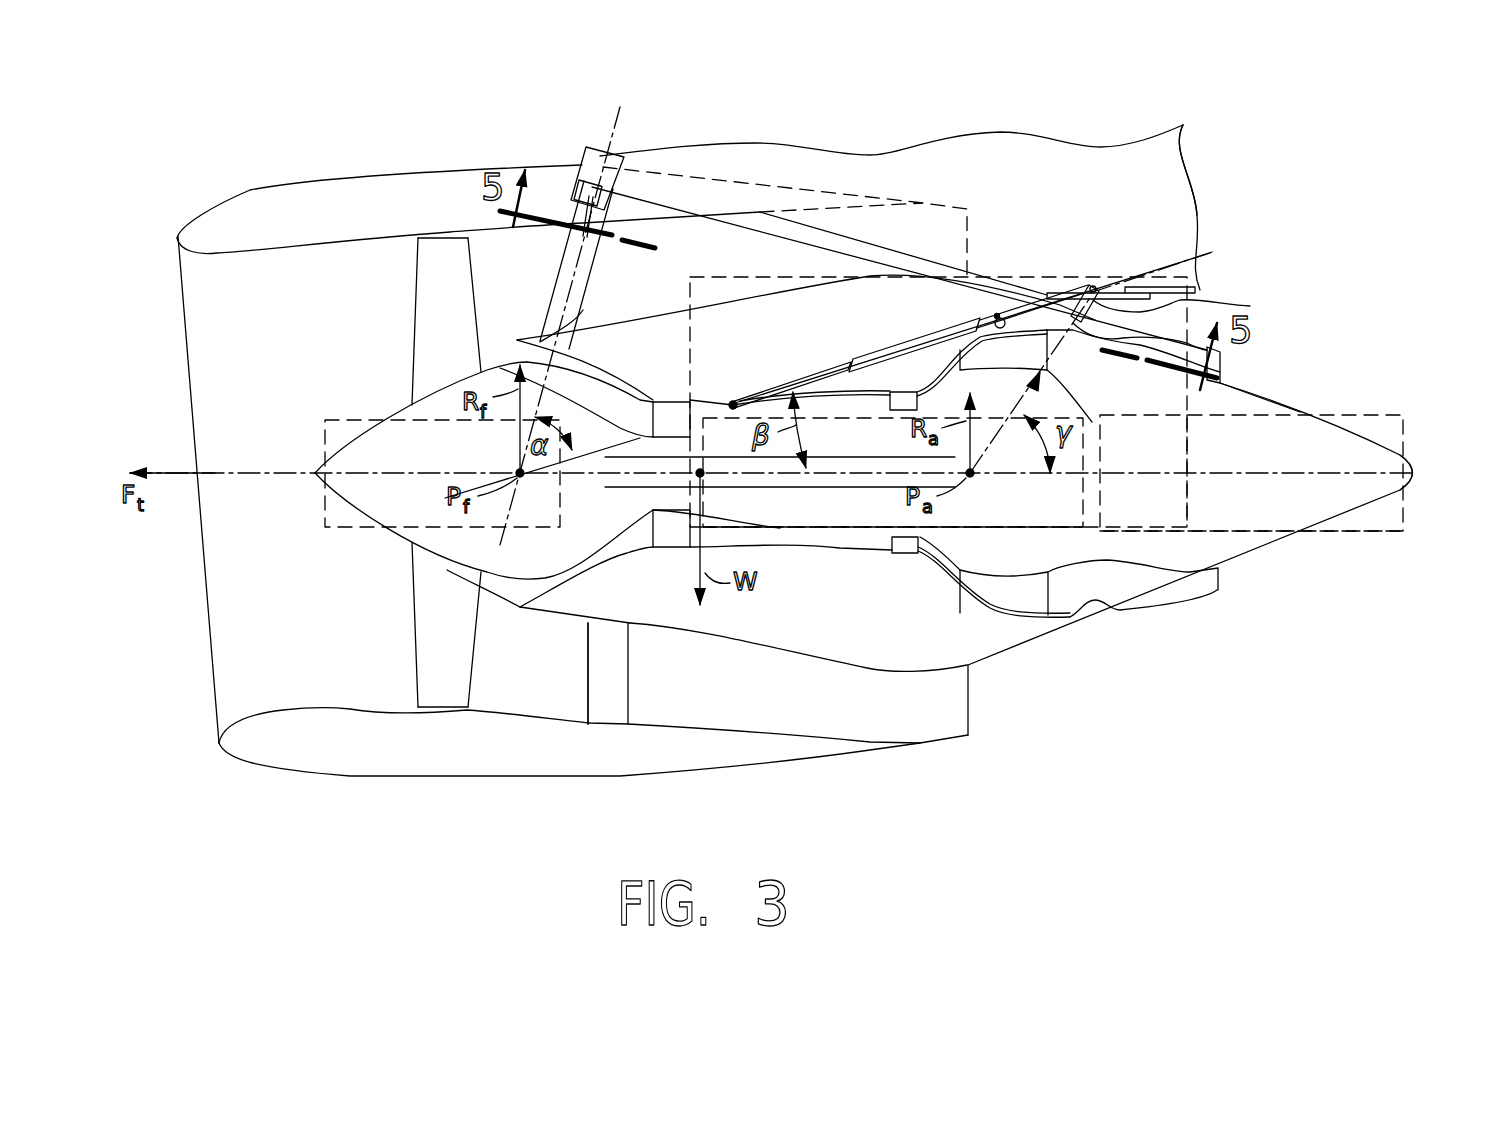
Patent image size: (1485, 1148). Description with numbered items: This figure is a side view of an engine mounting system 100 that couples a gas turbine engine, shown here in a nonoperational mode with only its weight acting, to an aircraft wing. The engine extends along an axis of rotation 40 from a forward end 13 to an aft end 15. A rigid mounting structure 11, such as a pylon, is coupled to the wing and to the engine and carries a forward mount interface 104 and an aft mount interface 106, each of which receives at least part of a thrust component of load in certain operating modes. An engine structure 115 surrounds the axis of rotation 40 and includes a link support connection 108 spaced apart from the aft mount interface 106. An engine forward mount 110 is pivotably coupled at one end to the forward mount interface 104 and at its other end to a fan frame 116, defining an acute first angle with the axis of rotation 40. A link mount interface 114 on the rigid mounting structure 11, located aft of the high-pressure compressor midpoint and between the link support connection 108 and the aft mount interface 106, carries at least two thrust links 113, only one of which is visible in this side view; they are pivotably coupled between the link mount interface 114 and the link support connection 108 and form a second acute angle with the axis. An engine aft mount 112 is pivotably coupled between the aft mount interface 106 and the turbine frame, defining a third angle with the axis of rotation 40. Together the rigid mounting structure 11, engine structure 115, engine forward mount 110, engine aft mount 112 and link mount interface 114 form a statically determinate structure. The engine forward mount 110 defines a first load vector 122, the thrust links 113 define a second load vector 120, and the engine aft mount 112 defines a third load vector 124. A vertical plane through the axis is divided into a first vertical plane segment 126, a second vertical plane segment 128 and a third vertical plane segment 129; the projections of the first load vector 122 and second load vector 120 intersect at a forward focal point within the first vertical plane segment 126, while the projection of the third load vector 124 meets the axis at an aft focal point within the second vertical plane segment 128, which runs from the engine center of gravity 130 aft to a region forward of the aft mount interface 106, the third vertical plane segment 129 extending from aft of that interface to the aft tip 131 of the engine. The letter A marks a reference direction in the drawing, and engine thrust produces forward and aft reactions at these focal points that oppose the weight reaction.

The engine mounting system 100 is at (1105, 125).
The rigid mounting structure 11 is at (931, 172).
The forward end 13 is at (182, 715).
The aft end 15 is at (1350, 343).
The axis of rotation 40 is at (1242, 470).
The forward mount interface 104 is at (599, 186).
The aft mount interface 106 is at (1198, 287).
The link support connection 108 is at (735, 403).
The engine forward mount 110 is at (577, 190).
The engine aft mount 112 is at (1141, 362).
The thrust links 113 is at (910, 355).
The link mount interface 114 is at (1066, 288).
The engine structure 115 is at (530, 268).
The fan frame 116 is at (550, 332).
The second load vector 120 is at (627, 548).
The first load vector 122 is at (560, 300).
The third load vector 124 is at (1101, 420).
The first vertical plane segment 126 is at (360, 530).
The second vertical plane segment 128 is at (840, 530).
The third vertical plane segment 129 is at (1323, 536).
The center of gravity 130 is at (703, 478).
The aft tip 131 is at (1422, 470).
The axial direction A is at (1188, 508).